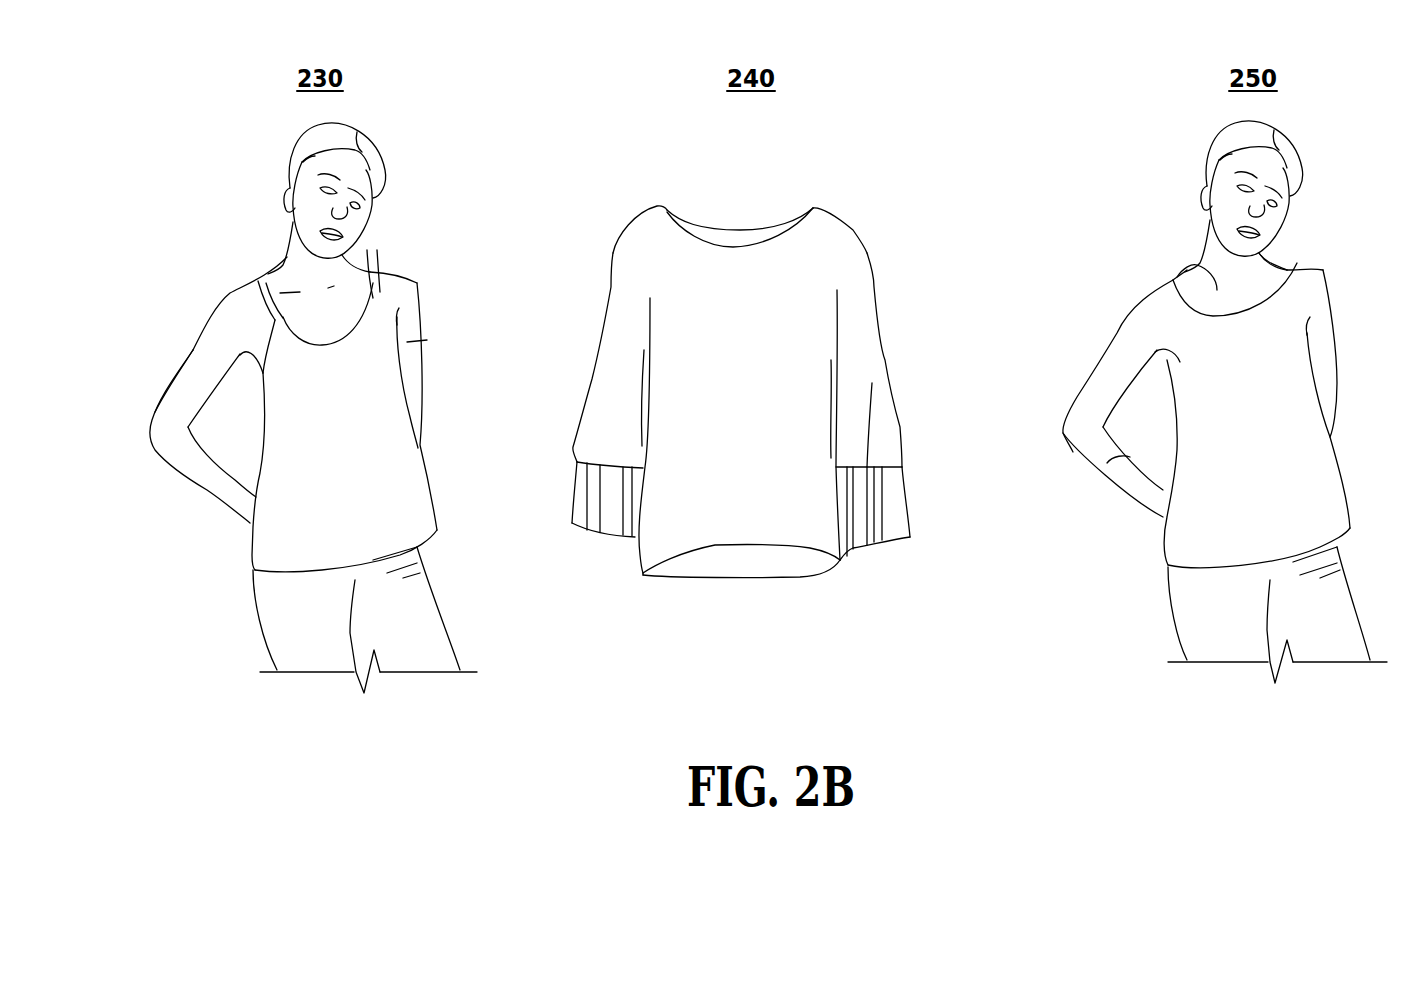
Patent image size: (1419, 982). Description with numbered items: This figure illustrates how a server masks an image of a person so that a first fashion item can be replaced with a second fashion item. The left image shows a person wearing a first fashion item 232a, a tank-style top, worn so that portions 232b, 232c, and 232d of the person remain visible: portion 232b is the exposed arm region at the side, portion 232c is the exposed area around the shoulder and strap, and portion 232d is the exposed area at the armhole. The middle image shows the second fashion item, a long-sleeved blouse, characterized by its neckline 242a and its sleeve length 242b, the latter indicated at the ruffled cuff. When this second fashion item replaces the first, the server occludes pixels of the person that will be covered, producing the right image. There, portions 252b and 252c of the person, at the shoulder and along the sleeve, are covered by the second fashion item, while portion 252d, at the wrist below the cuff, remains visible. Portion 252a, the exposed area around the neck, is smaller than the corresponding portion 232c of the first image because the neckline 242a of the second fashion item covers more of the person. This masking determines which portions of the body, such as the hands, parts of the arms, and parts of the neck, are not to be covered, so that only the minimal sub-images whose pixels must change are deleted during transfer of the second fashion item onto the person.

The fashion item 232a is at (252, 553).
The visible portion of the person 232b is at (197, 360).
The visible portion of the person 232c is at (352, 285).
The visible portion of the person 232d is at (427, 340).
The neckline 242a is at (737, 228).
The sleeve length 242b is at (580, 490).
The portion of the person 252a is at (1193, 270).
The covered portion of the person 252b is at (1312, 281).
The covered portion of the person 252c is at (1097, 367).
The visible portion of the person 252d is at (1140, 490).